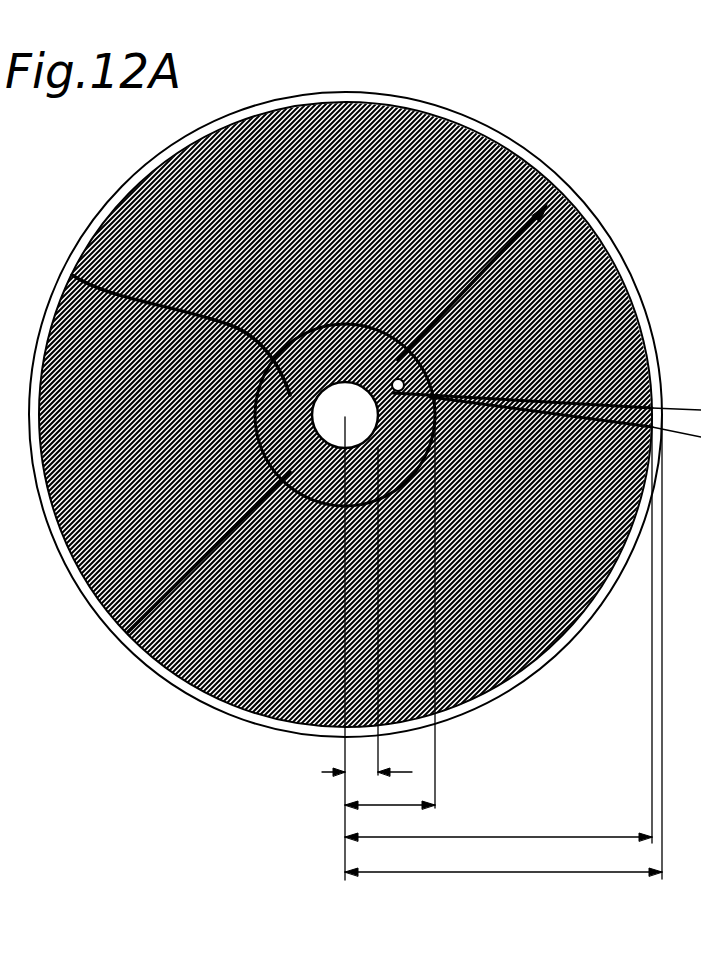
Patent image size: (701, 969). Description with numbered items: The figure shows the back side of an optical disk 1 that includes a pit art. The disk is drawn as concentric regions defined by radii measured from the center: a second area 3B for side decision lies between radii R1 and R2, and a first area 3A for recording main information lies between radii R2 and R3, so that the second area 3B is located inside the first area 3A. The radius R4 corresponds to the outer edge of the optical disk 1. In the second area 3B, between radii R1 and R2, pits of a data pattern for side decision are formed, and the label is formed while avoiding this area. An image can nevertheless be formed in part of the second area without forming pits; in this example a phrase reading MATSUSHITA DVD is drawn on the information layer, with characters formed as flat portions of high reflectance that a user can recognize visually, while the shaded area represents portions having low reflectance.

The optical disk 1 is at (120, 647).
The first area 3A is at (563, 193).
The second area 3B is at (72, 275).
The radius R1 is at (367, 612).
The radius R2 is at (390, 604).
The radius R3 is at (498, 629).
The radius R4 is at (503, 647).